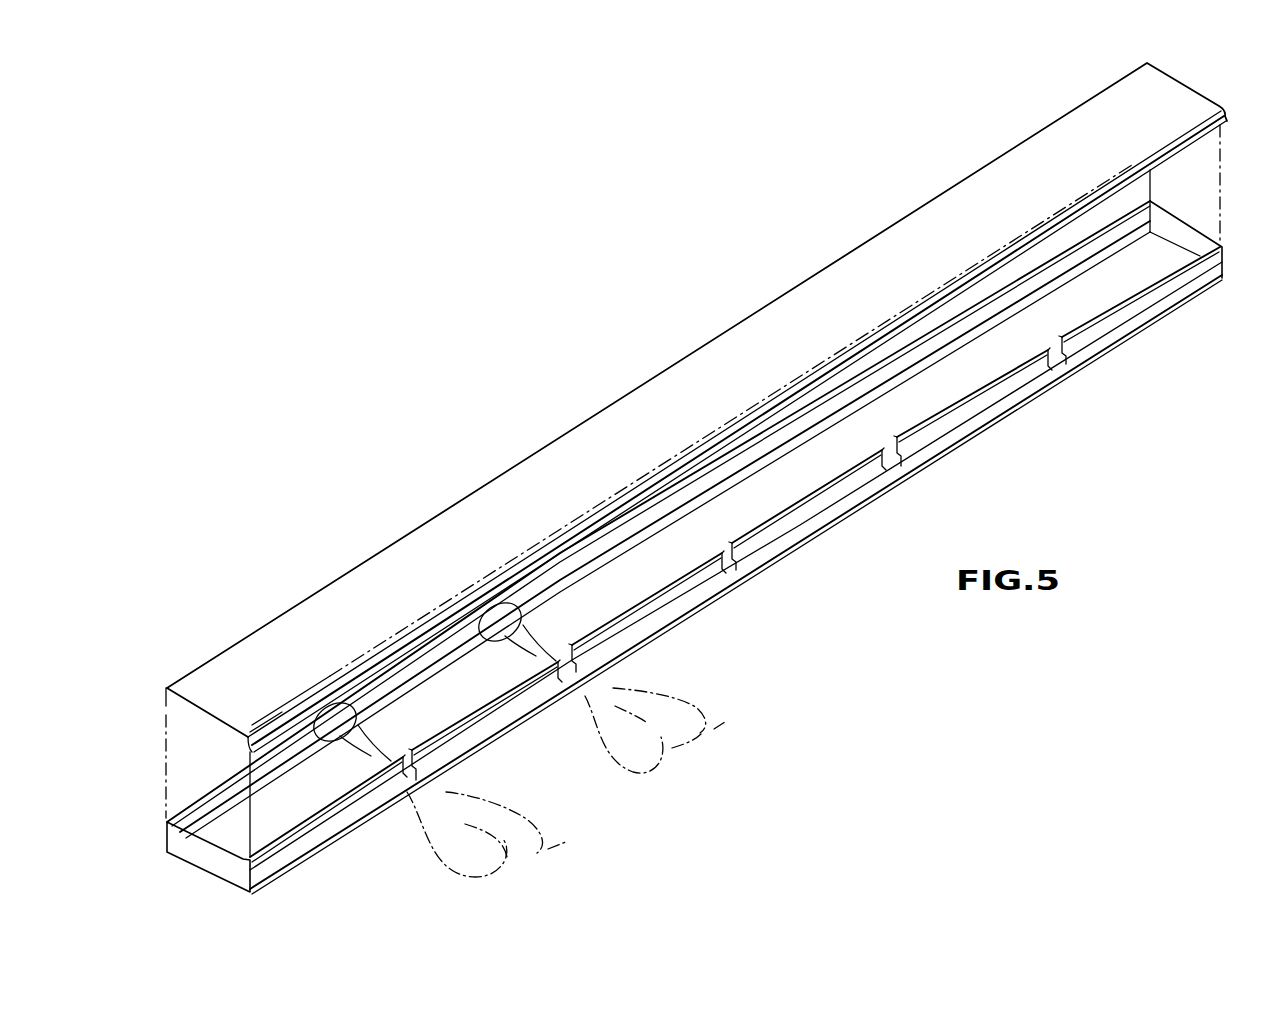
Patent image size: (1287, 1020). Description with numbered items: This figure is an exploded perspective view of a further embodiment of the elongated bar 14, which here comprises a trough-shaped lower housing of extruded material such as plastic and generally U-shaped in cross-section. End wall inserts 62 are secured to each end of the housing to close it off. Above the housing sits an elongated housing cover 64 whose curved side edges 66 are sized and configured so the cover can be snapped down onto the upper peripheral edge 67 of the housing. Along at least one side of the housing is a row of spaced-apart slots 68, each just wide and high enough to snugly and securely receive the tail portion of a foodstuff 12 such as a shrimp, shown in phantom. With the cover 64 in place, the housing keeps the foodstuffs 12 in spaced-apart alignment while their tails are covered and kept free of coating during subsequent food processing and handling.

The foodstuffs 12 is at (533, 736).
The elongated bar 14 is at (830, 530).
The end wall inserts 62 is at (243, 864).
The housing cover 64 is at (748, 326).
The curved side edges 66 is at (1028, 138).
The upper peripheral edge 67 is at (168, 818).
The slots 68 is at (423, 774).